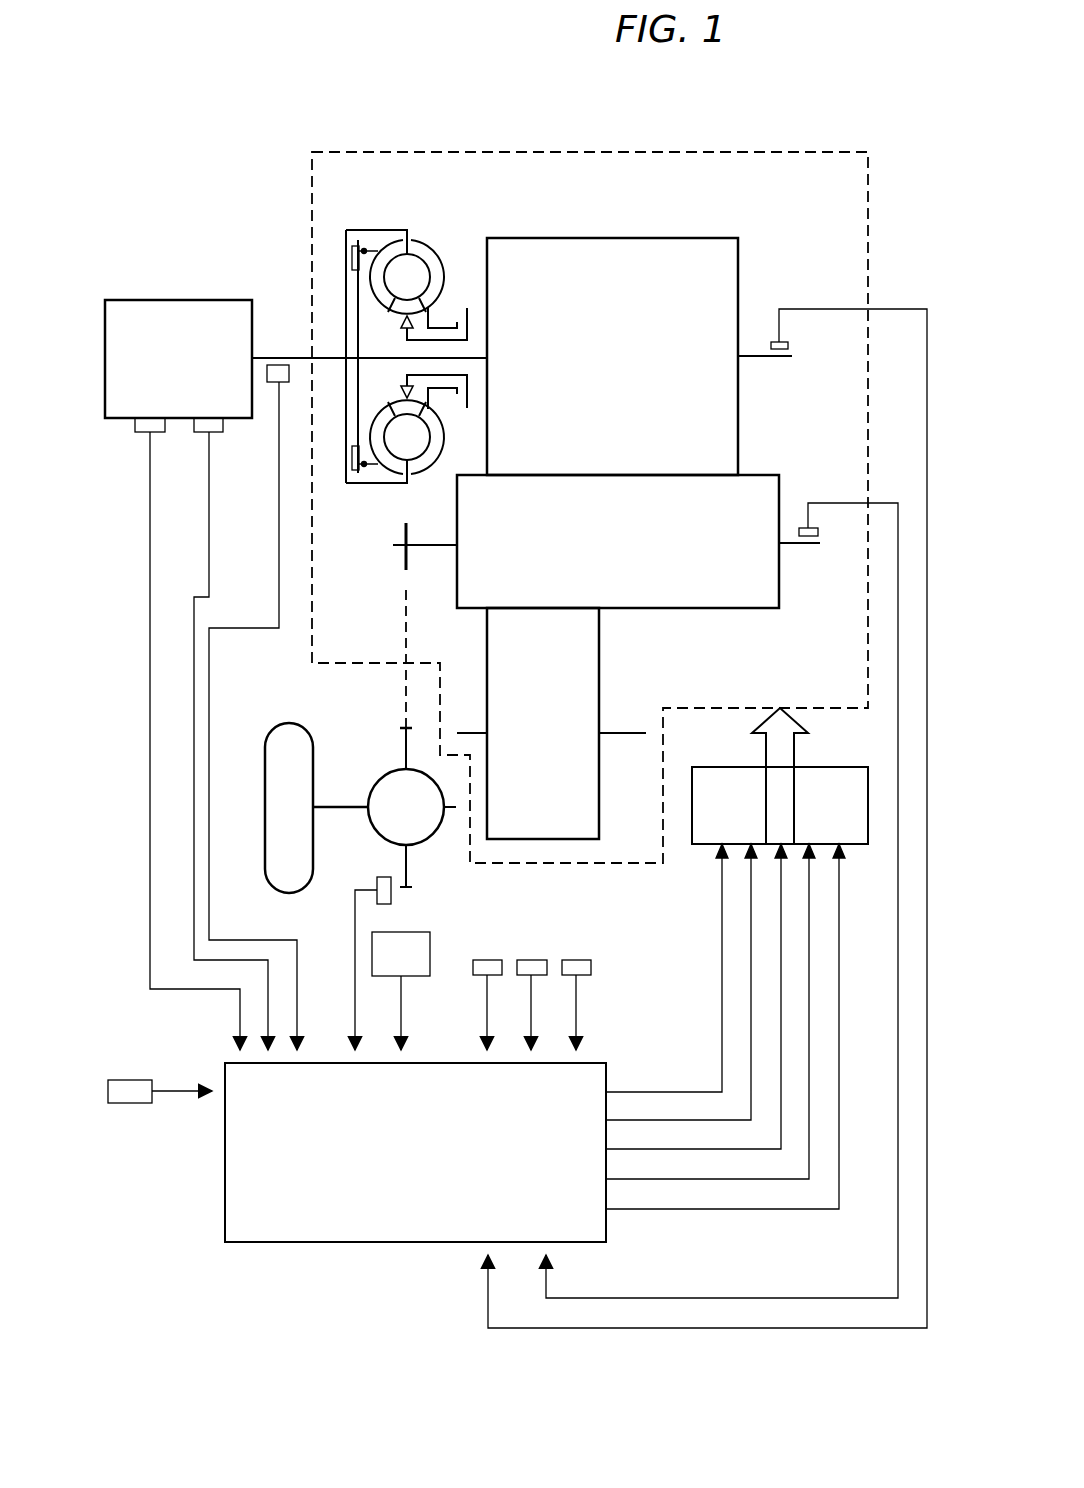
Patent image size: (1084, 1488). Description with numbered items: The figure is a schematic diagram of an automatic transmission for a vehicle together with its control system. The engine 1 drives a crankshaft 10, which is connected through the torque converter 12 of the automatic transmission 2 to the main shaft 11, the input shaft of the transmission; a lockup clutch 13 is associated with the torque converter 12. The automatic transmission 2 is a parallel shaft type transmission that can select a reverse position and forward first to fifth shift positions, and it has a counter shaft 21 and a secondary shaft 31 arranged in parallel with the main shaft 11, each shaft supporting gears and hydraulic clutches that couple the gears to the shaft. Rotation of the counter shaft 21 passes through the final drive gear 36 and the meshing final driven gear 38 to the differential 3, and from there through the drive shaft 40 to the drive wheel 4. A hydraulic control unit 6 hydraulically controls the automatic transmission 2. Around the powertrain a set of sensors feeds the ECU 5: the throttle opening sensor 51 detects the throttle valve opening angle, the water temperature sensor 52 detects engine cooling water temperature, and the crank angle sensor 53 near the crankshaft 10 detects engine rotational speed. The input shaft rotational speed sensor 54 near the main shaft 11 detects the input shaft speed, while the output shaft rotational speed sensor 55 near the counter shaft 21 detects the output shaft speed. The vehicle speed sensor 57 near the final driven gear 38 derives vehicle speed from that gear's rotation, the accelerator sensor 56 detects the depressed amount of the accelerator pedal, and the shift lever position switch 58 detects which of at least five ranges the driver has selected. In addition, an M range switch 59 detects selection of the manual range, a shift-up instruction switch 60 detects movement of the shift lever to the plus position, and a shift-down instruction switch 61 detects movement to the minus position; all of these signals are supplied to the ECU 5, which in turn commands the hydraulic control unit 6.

The engine 1 is at (190, 300).
The automatic transmission 2 is at (515, 148).
The differential 3 is at (388, 777).
The drive wheel 4 is at (286, 723).
The ECU 5 is at (607, 1063).
The hydraulic control unit 6 is at (816, 767).
The crankshaft 10 is at (281, 358).
The main shaft 11 is at (782, 357).
The torque converter 12 is at (425, 230).
The lockup clutch 13 is at (356, 240).
The counter shaft 21 is at (812, 545).
The secondary shaft 31 is at (633, 734).
The final drive gear 36 is at (404, 570).
The final driven gear 38 is at (405, 727).
The drive shaft 40 is at (340, 807).
The throttle opening sensor 51 is at (158, 432).
The water temperature sensor 52 is at (218, 432).
The crank angle sensor 53 is at (272, 382).
The input shaft rotational speed sensor 54 is at (778, 342).
The output shaft rotational speed sensor 55 is at (806, 528).
The accelerator sensor 56 is at (130, 1080).
The vehicle speed sensor 57 is at (378, 880).
The shift lever position switch 58 is at (402, 932).
The M range switch 59 is at (486, 960).
The shift-up instruction switch 60 is at (528, 960).
The shift-down instruction switch 61 is at (574, 960).